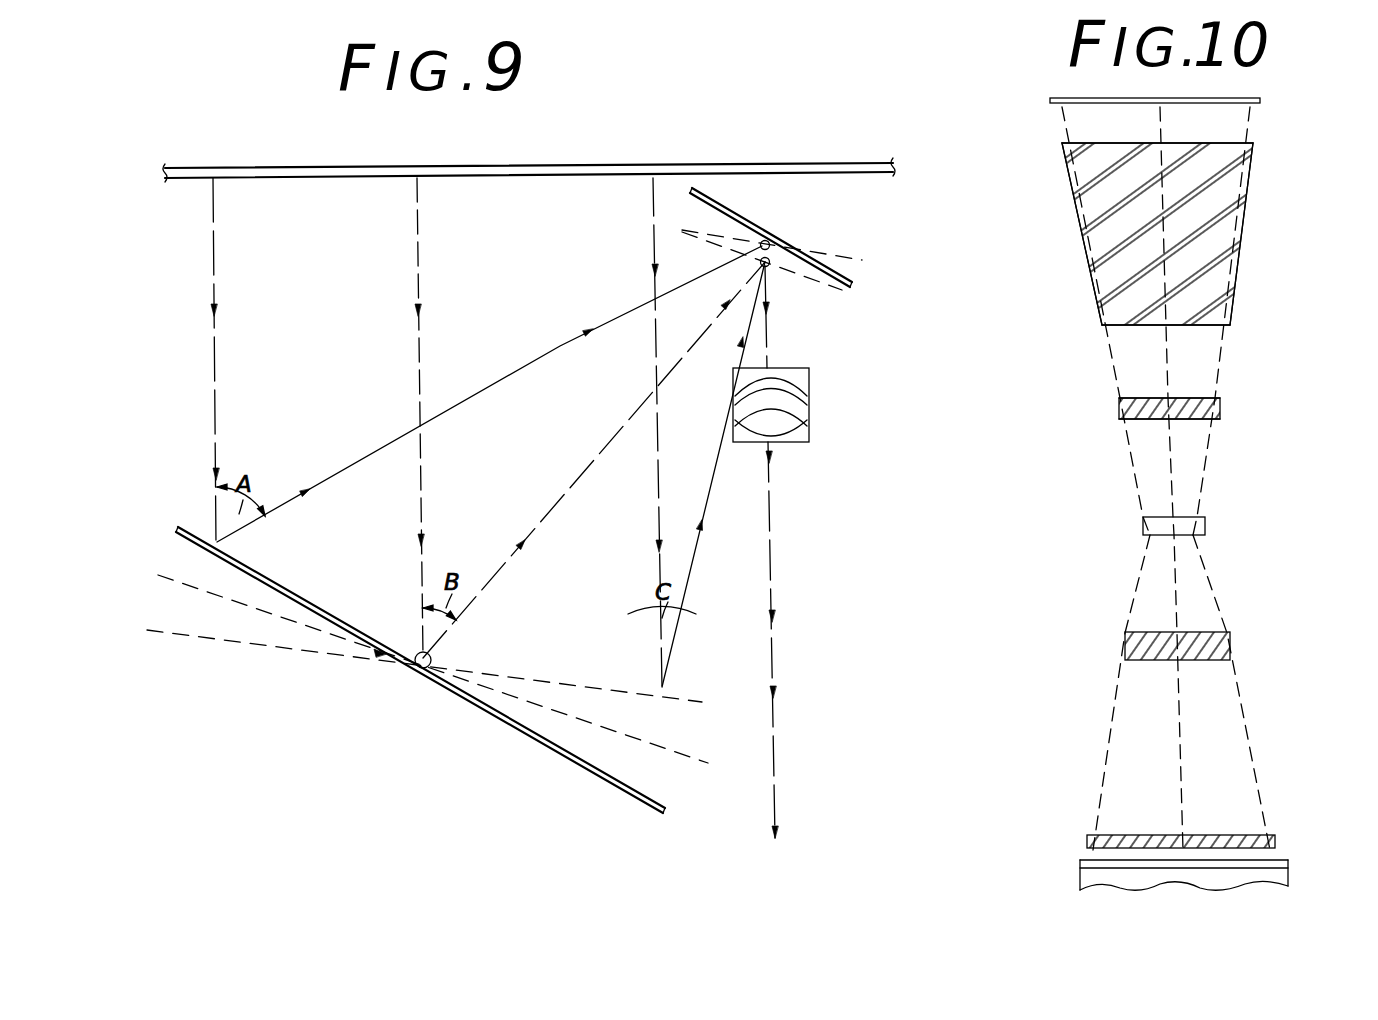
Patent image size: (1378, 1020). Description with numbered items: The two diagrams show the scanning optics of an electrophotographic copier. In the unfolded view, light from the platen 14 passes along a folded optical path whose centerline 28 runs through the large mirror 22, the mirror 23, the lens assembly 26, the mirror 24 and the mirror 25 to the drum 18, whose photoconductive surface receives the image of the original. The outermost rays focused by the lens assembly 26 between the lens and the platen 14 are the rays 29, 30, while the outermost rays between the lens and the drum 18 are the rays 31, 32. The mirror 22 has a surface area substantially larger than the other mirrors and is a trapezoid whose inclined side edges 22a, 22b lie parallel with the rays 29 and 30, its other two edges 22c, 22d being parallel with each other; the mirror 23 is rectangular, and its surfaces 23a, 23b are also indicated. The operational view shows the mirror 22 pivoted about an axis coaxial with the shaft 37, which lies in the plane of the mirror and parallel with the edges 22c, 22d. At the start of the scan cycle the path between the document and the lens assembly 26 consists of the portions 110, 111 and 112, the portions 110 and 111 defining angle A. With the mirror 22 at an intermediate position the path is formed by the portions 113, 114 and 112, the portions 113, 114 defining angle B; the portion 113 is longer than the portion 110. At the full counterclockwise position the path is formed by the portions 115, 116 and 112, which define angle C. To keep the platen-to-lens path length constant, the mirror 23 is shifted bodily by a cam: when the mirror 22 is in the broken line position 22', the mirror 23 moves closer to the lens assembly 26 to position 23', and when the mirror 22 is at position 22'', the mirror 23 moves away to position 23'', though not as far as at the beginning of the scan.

In FIG. 9, the platen 14 is at (500, 167).
In FIG. 10, the platen 14 is at (1240, 100).
In FIG. 9, the optical path portion 110 is at (212, 371).
In FIG. 9, the optical path portion 113 is at (419, 285).
In FIG. 9, the optical path portion 115 is at (658, 545).
In FIG. 9, the mirror 22 is at (406, 648).
In FIG. 10, the mirror 22 is at (1155, 235).
In FIG. 9, the mirror broken line position 22' is at (423, 654).
In FIG. 9, the mirror broken line position 22'' is at (418, 648).
In FIG. 9, the shaft 37 is at (416, 667).
In FIG. 9, the optical path portion 111 is at (512, 384).
In FIG. 9, the optical path portion 114 is at (532, 532).
In FIG. 9, the optical path portion 116 is at (702, 526).
In FIG. 9, the mirror 23 is at (756, 237).
In FIG. 10, the mirror 23 is at (1205, 413).
In FIG. 9, the mirror broken line position 23' is at (786, 282).
In FIG. 9, the mirror broken line position 23'' is at (788, 239).
In FIG. 9, the optical path portion 112 is at (770, 337).
In FIG. 9, the lens assembly 26 is at (808, 406).
In FIG. 10, the lens assembly 26 is at (1205, 526).
In FIG. 9, the centerline of the folded optical path 28 is at (778, 588).
In FIG. 10, the centerline of the folded optical path 28 is at (1166, 374).
In FIG. 10, the mirror edge 22c is at (1216, 144).
In FIG. 10, the inclined side edge 22b is at (1082, 238).
In FIG. 10, the inclined side edge 22a is at (1239, 256).
In FIG. 10, the mirror edge 22d is at (1109, 330).
In FIG. 10, the outermost ray 30 is at (1118, 378).
In FIG. 10, the outermost ray 32 is at (1114, 739).
In FIG. 10, the outermost ray 29 is at (1220, 339).
In FIG. 10, the outermost ray 31 is at (1247, 743).
In FIG. 10, the lens front surface 23a is at (1180, 398).
In FIG. 10, the lens rear surface 23b is at (1138, 422).
In FIG. 10, the mirror 24 is at (1230, 645).
In FIG. 10, the mirror 25 is at (1274, 840).
In FIG. 10, the drum 18 is at (1280, 872).